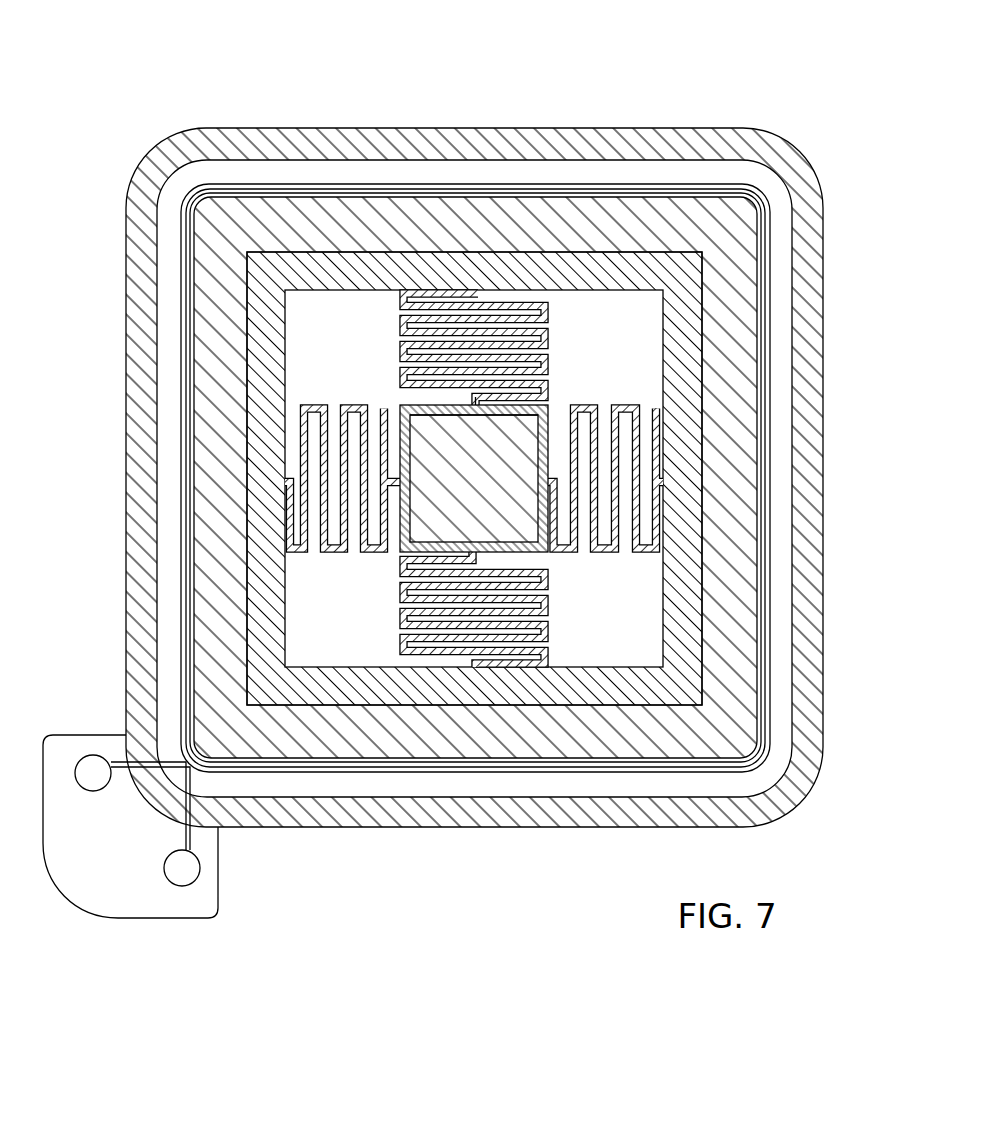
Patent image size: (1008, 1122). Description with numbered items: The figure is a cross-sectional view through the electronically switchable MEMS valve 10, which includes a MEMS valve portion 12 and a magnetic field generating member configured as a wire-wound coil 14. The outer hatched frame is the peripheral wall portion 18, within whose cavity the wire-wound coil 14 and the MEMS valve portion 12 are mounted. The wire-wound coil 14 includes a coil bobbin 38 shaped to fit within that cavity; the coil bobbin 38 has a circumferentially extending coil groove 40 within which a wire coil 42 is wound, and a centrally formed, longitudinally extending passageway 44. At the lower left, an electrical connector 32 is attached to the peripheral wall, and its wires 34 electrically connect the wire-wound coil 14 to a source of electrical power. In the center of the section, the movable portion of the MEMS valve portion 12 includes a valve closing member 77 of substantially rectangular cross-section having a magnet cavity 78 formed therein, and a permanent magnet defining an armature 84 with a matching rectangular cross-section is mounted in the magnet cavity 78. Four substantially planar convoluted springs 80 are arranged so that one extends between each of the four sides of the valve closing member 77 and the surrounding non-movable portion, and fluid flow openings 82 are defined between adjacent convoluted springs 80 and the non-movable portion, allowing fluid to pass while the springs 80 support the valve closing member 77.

The electronically switchable MEMS valve 10 is at (140, 64).
The MEMS valve portion 12 is at (286, 242).
The wire-wound coil 14 is at (338, 152).
The peripheral wall portion 18 is at (806, 152).
The electrical connector 32 is at (212, 884).
The wires 34 is at (93, 773).
The coil bobbin 38 is at (442, 222).
The coil groove 40 is at (519, 188).
The wire coil 42 is at (573, 190).
The passageway 44 is at (636, 256).
The valve closing member 77 is at (413, 413).
The magnet cavity 78 is at (527, 427).
The convoluted springs 80 is at (402, 316).
The fluid flow openings 82 is at (302, 338).
The armature 84 is at (510, 522).